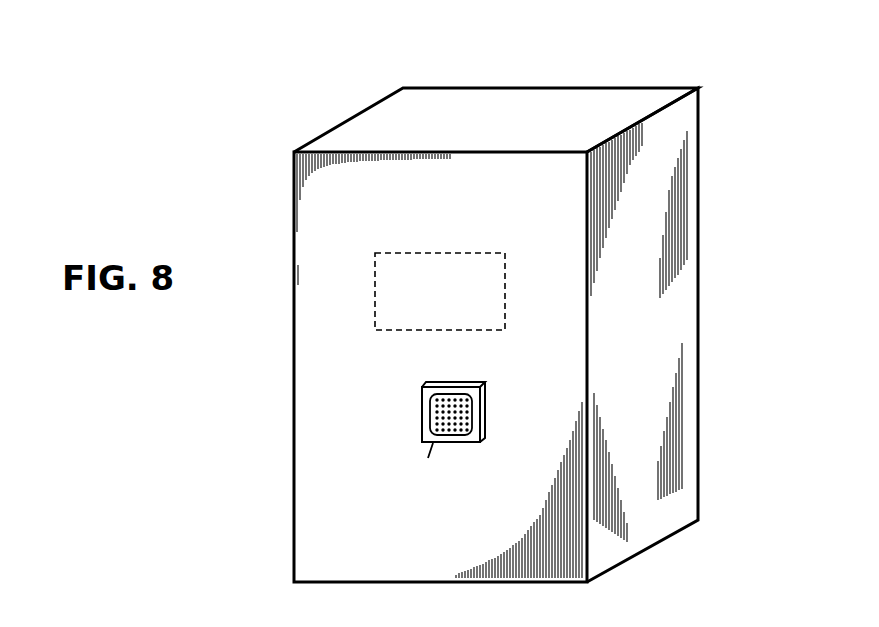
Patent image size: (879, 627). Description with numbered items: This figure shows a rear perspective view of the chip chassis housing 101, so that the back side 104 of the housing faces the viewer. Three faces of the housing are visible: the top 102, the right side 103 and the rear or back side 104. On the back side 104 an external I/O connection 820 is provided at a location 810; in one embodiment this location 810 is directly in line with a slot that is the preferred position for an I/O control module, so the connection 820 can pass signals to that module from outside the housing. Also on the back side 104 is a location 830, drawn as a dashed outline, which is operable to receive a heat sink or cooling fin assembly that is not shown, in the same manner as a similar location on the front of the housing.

The housing 101 is at (646, 82).
The top 102 is at (454, 122).
The right side 103 is at (661, 343).
The back side 104 is at (566, 193).
The location 810 is at (428, 458).
The external I/O connection 820 is at (401, 422).
The location 830 is at (466, 307).